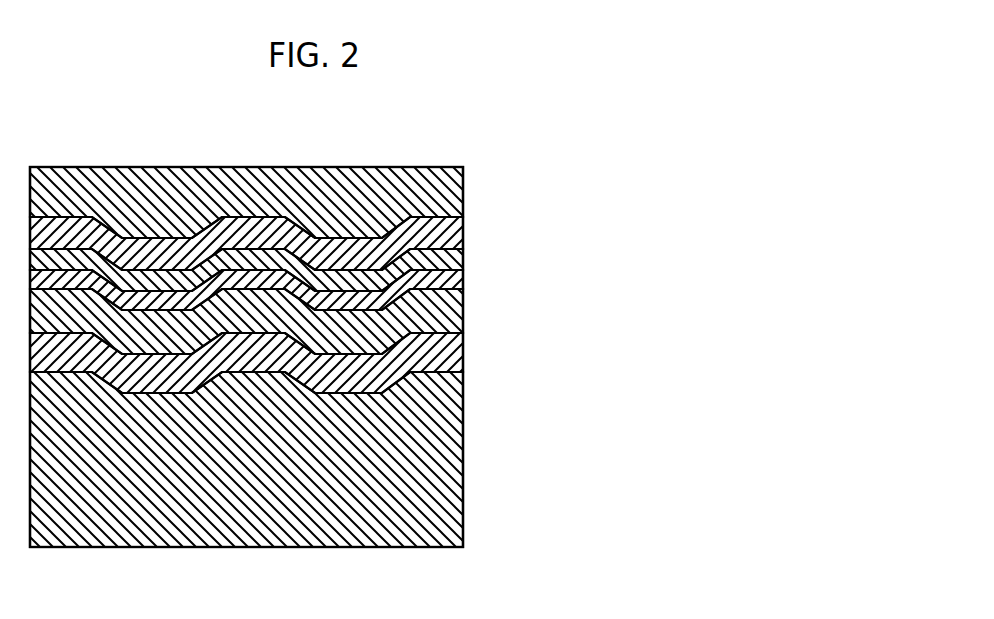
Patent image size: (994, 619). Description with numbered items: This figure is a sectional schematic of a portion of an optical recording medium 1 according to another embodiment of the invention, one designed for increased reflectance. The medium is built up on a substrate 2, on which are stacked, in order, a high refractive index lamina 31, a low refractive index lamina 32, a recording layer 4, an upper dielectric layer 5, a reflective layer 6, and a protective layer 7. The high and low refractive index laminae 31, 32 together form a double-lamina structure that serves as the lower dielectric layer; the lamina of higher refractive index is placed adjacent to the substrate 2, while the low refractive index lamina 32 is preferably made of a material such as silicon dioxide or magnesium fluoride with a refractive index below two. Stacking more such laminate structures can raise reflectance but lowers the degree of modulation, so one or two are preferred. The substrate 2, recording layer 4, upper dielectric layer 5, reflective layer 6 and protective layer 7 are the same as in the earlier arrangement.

The optical recording medium 1 is at (480, 528).
The substrate 2 is at (448, 452).
The high refractive index lamina 31 is at (463, 357).
The low refractive index lamina 32 is at (463, 320).
The recording layer 4 is at (463, 278).
The upper dielectric layer 5 is at (463, 255).
The reflective layer 6 is at (463, 230).
The protective layer 7 is at (463, 178).